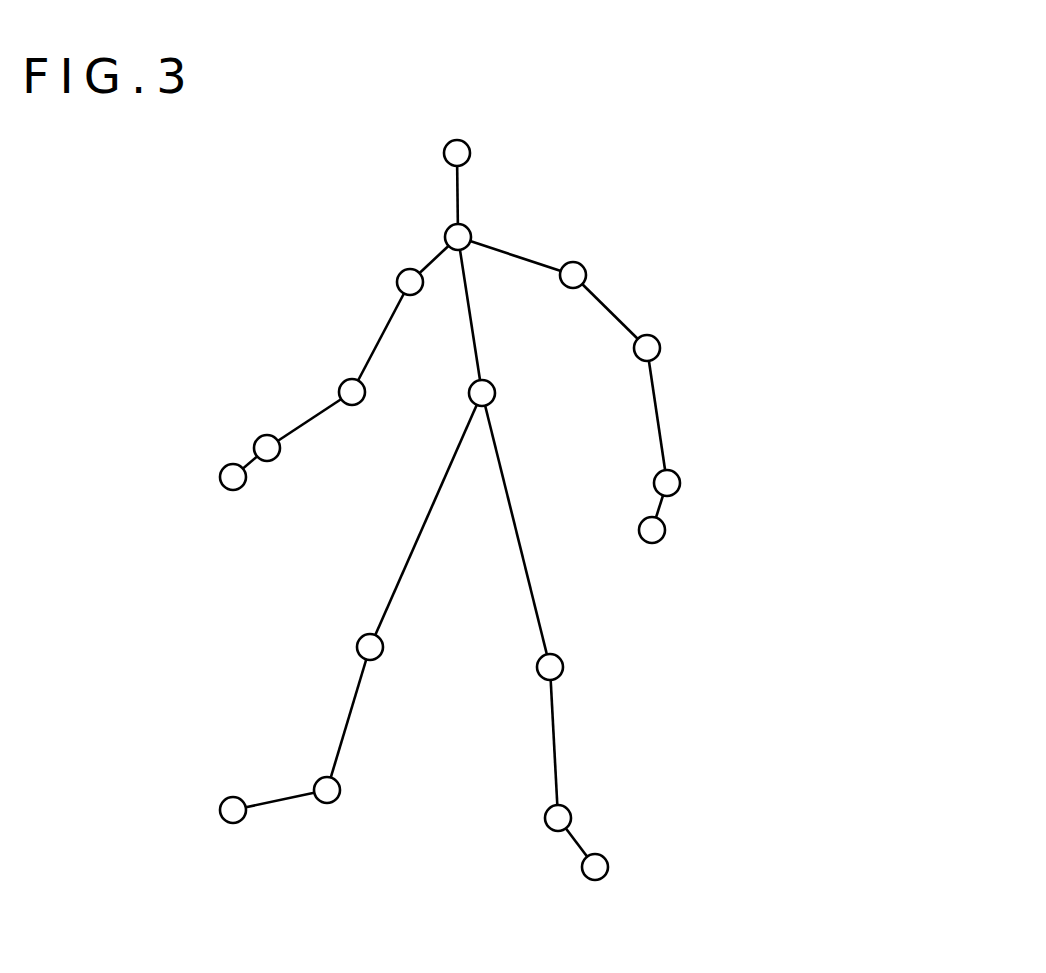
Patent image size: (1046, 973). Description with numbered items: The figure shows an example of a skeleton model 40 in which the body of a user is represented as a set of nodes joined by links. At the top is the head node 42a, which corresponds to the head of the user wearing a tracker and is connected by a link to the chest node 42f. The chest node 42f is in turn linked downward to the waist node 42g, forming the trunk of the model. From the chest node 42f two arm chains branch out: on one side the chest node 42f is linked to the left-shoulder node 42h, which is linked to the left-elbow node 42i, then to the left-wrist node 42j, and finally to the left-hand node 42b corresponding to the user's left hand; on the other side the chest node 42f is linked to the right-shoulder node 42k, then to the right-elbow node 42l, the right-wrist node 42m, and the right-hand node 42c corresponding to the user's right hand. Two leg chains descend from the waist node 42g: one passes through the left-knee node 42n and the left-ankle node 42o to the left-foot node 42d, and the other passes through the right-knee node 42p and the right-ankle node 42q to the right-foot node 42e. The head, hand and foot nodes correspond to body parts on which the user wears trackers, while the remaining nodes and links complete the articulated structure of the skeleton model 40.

The skeleton model 40 is at (763, 217).
The head node 42a is at (468, 145).
The left-hand node 42b is at (666, 530).
The right-hand node 42c is at (225, 490).
The left-foot node 42d is at (609, 867).
The right-foot node 42e is at (233, 824).
The chest node 42f is at (470, 230).
The waist node 42g is at (496, 393).
The left-shoulder node 42h is at (587, 275).
The left-elbow node 42i is at (661, 348).
The left-wrist node 42j is at (681, 483).
The right-shoulder node 42k is at (406, 269).
The right-elbow node 42l is at (345, 379).
The right-wrist node 42m is at (266, 435).
The left-knee node 42n is at (564, 667).
The left-ankle node 42o is at (572, 818).
The right-knee node 42p is at (357, 647).
The right-ankle node 42q is at (331, 804).